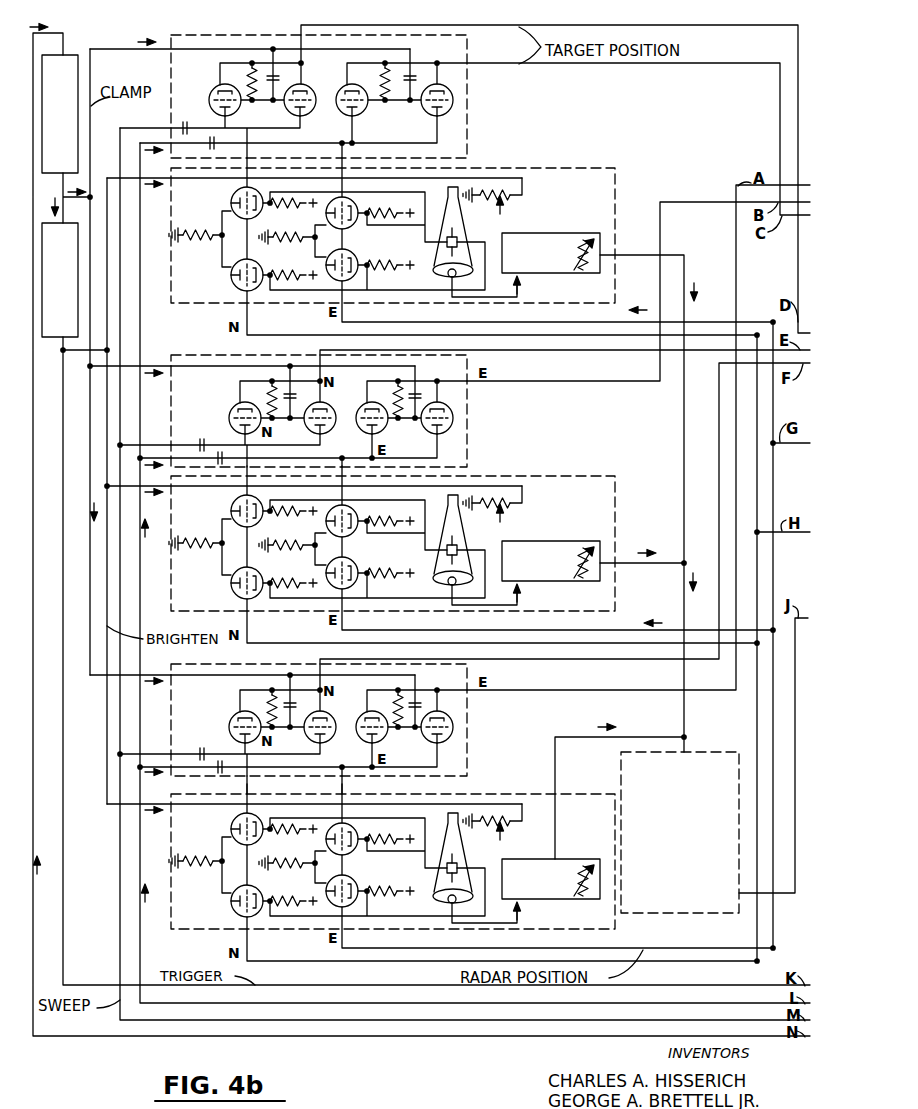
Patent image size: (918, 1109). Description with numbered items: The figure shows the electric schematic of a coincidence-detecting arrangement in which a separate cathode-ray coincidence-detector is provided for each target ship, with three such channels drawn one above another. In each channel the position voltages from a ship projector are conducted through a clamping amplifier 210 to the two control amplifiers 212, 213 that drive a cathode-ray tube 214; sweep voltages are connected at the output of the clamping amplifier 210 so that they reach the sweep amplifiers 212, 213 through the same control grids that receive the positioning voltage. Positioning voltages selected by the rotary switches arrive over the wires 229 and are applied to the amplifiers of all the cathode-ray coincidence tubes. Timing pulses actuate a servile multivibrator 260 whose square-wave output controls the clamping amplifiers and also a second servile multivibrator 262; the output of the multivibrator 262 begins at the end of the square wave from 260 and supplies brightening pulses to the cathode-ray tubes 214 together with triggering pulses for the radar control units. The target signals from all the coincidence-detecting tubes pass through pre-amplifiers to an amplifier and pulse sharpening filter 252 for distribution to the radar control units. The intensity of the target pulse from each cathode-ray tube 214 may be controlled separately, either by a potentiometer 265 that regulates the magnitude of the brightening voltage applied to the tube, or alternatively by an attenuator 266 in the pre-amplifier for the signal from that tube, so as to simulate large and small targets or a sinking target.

The servile multivibrator 260 is at (76, 109).
The second servile multivibrator 262 is at (76, 276).
The clamping amplifier 210 is at (462, 115).
The control amplifier 212 is at (251, 246).
The control amplifier 213 is at (381, 251).
The cathode-ray tube 214 is at (468, 230).
The potentiometer 265 is at (520, 198).
The attenuator 266 is at (540, 276).
The amplifier and pulse sharpening filter 252 is at (647, 584).
The wires 229 is at (772, 915).